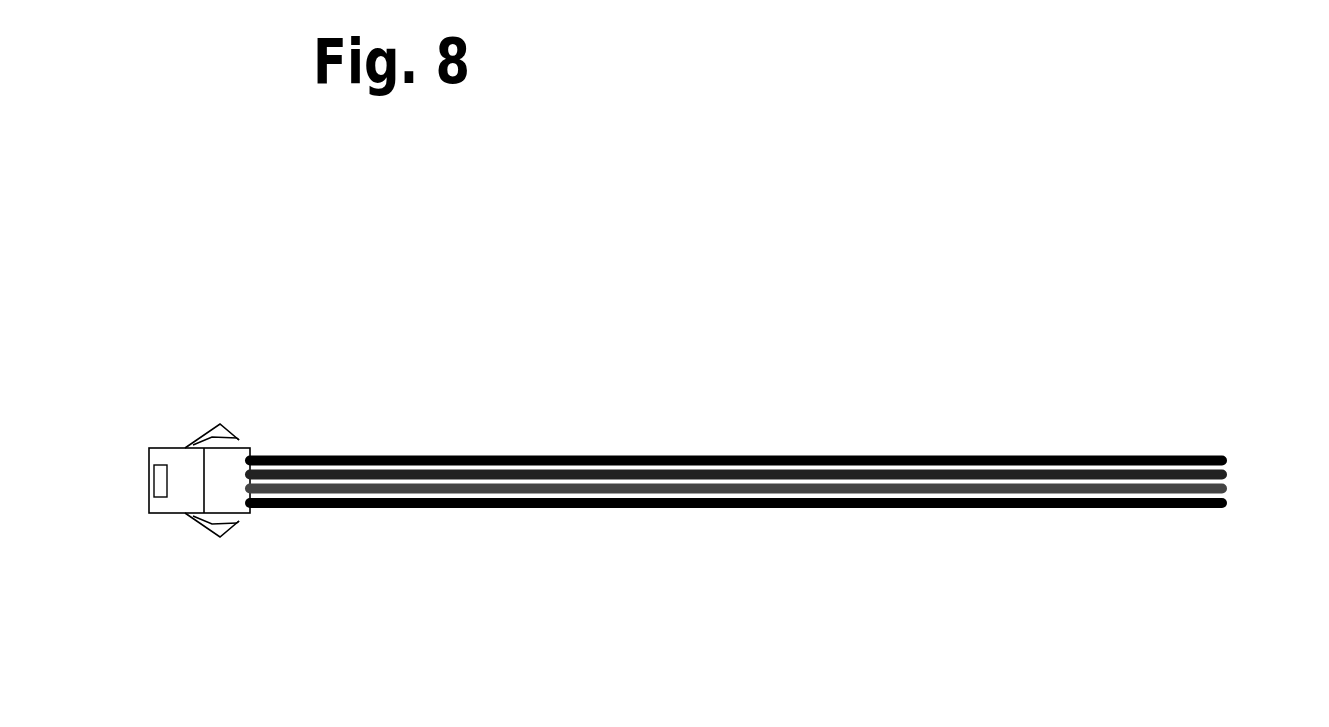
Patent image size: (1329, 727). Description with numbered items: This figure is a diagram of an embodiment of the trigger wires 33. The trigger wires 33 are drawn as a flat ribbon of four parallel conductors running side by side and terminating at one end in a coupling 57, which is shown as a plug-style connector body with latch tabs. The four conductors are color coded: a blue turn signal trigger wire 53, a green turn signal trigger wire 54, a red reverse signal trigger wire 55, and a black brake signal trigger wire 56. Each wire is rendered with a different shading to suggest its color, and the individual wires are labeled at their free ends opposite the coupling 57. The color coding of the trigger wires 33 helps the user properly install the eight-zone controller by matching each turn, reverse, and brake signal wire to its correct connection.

The trigger wires 33 is at (783, 449).
The blue turn signal trigger wire 53 is at (1183, 513).
The green turn signal trigger wire 54 is at (1227, 490).
The red reverse signal trigger wire 55 is at (1227, 473).
The black brake signal trigger wire 56 is at (1166, 456).
The coupling 57 is at (152, 442).